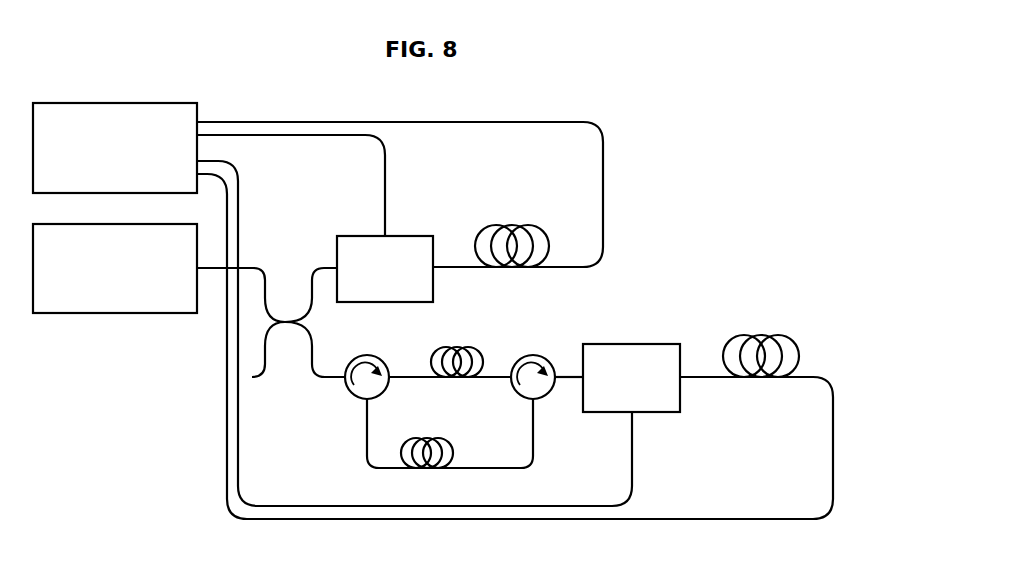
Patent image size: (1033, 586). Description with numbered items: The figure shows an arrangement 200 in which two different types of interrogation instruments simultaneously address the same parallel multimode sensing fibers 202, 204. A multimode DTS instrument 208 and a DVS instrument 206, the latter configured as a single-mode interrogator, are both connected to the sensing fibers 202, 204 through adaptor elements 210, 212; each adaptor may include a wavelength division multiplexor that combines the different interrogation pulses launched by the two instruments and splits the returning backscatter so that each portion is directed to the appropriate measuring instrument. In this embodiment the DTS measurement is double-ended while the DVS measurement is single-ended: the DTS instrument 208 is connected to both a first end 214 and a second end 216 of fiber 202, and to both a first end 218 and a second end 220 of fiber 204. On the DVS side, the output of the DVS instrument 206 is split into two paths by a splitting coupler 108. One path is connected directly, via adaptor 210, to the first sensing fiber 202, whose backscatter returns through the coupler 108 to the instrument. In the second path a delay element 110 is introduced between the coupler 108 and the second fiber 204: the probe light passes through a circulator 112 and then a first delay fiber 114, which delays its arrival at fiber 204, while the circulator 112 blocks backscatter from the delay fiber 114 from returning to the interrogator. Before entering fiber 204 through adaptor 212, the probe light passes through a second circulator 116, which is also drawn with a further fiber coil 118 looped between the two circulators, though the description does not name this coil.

The arrangement 200 is at (686, 103).
The DTS instrument 208 is at (97, 103).
The DVS instrument 206 is at (110, 313).
The second end of fiber 202 216 is at (500, 122).
The first end of fiber 202 214 is at (282, 138).
The first end of fiber 204 218 is at (348, 506).
The second end of fiber 204 220 is at (708, 519).
The adaptor element 210 is at (412, 236).
The adaptor element 212 is at (618, 344).
The sensing fiber 202 is at (512, 225).
The sensing fiber 204 is at (760, 335).
The splitting coupler 108 is at (285, 304).
The delay element 110 is at (346, 434).
The circulator 112 is at (367, 355).
The first delay fiber 114 is at (457, 347).
The second circulator 116 is at (533, 355).
The fiber coil 118 is at (427, 438).